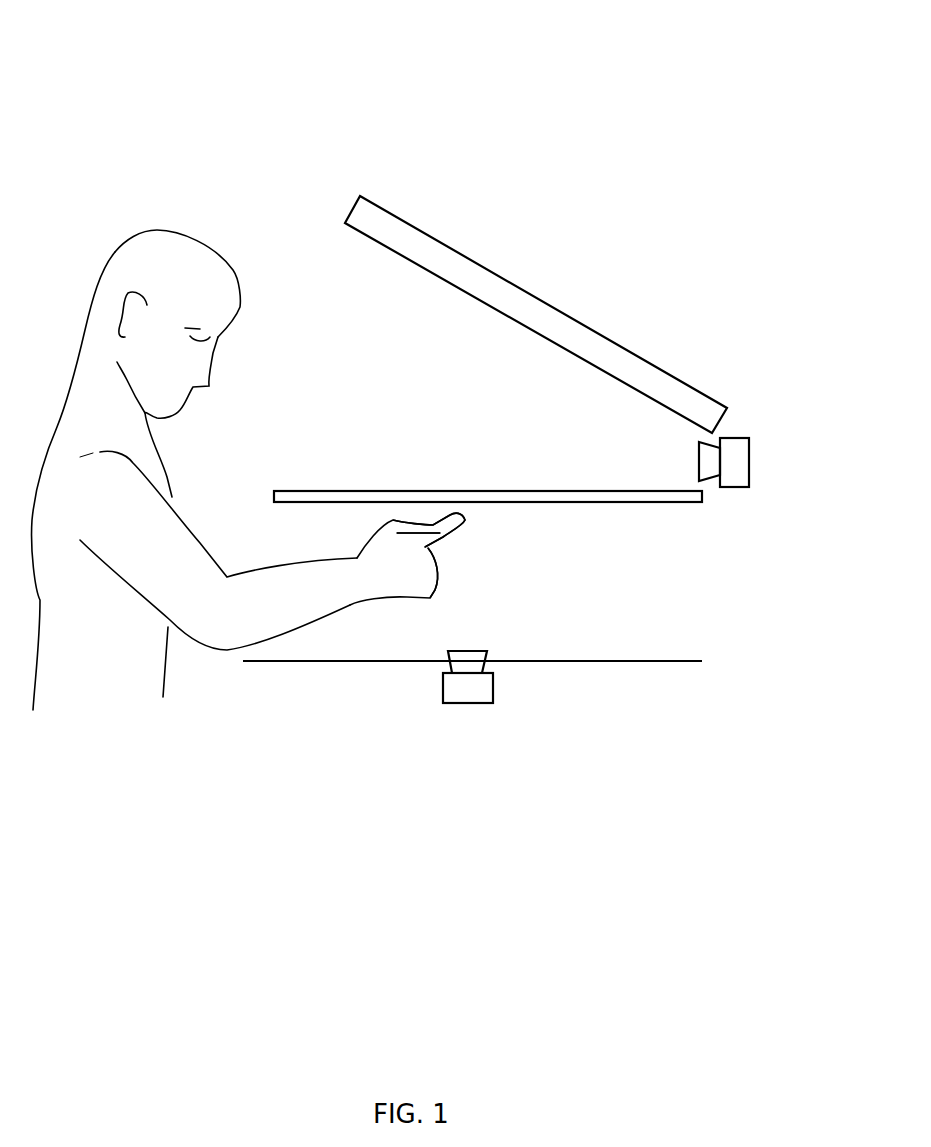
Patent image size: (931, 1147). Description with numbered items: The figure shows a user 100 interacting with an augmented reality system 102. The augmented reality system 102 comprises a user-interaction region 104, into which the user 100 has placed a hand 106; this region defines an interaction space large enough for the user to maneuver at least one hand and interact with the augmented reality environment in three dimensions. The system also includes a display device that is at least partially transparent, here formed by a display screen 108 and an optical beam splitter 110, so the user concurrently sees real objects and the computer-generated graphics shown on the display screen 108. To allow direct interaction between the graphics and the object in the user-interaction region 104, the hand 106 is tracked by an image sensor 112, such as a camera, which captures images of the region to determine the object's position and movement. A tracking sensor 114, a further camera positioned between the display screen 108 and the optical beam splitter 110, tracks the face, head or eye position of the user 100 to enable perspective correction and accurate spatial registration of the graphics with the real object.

The user 100 is at (115, 252).
The augmented reality system 102 is at (315, 85).
The user-interaction region 104 is at (658, 581).
The hand 106 is at (439, 562).
The display screen 108 is at (552, 307).
The optical beam splitter 110 is at (342, 492).
The image sensor 112 is at (467, 703).
The tracking sensor 114 is at (750, 458).